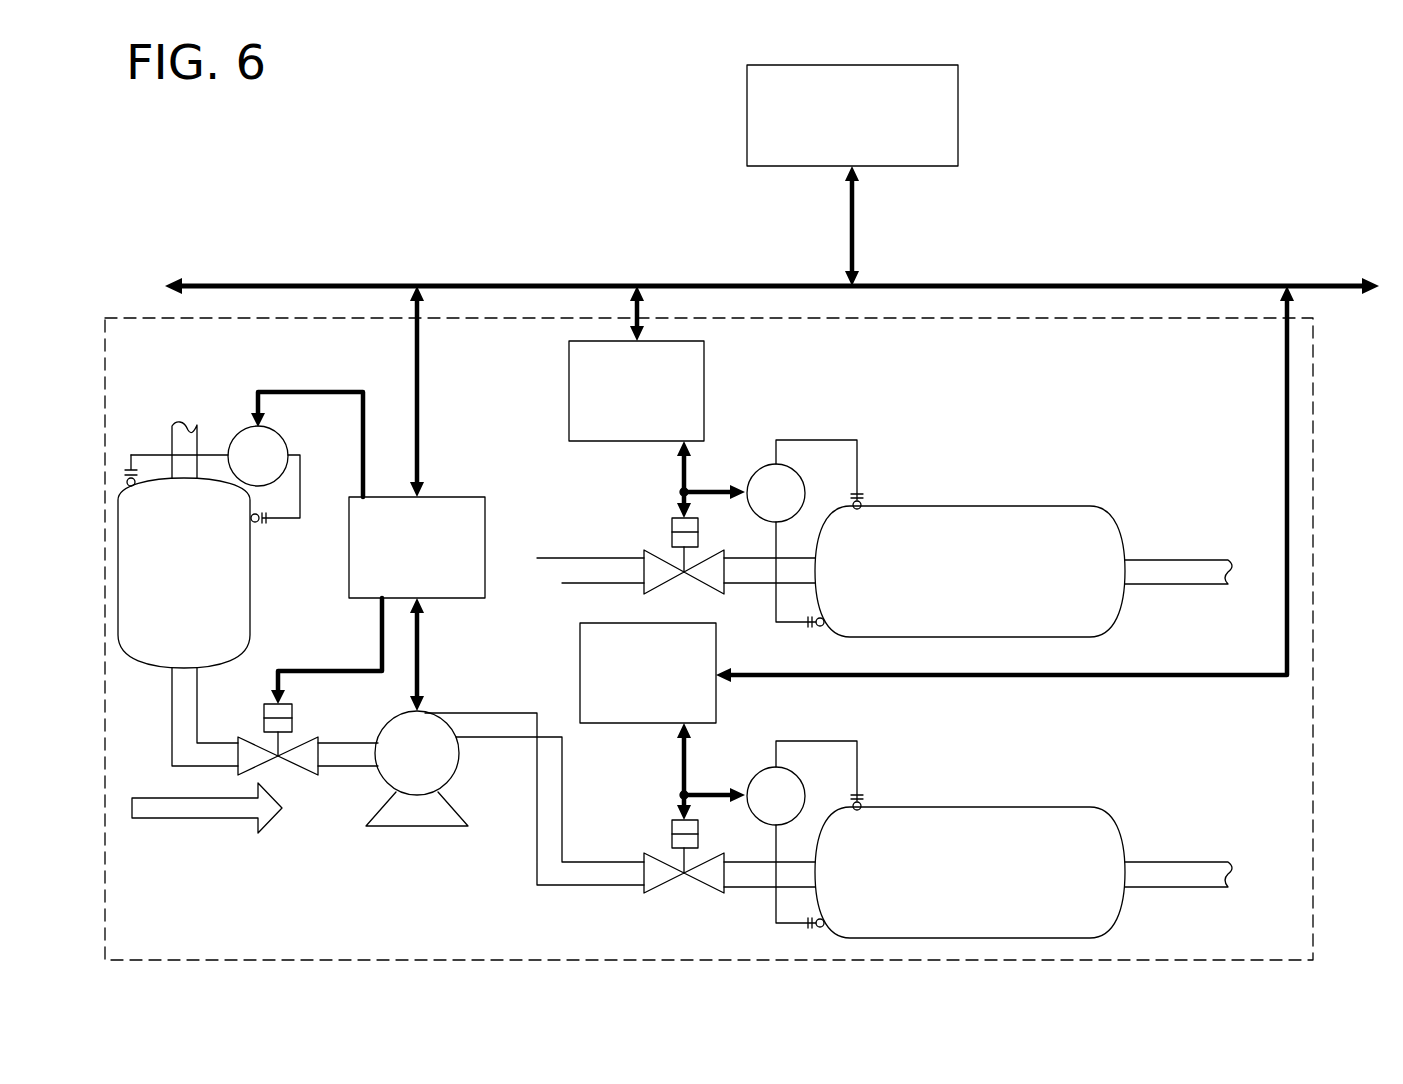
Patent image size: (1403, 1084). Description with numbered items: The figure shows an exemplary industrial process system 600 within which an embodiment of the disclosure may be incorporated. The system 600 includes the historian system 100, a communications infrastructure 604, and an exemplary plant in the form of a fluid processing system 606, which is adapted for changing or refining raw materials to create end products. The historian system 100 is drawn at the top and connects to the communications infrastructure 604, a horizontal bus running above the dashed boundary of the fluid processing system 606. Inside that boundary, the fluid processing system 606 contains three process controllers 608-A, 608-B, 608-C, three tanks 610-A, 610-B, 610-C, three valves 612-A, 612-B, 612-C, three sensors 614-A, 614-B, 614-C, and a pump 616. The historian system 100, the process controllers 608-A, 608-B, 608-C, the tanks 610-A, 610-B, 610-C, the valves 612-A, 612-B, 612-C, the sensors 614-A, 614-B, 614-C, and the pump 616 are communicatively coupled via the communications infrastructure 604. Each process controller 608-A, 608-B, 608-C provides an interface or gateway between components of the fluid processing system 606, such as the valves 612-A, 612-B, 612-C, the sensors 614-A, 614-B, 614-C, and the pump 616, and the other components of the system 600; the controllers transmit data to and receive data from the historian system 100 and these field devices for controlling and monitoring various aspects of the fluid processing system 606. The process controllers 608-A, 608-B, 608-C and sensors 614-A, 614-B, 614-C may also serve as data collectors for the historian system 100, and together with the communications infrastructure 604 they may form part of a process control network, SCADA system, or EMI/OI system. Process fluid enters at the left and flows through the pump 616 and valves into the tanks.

The system 600 is at (496, 84).
The historian system 100 is at (838, 140).
The communications infrastructure 604 is at (257, 285).
The fluid processing system 606 is at (1314, 403).
The process controller 608-A is at (485, 508).
The process controller 608-B is at (706, 381).
The process controller 608-C is at (628, 723).
The tank 610-A is at (250, 597).
The tank 610-B is at (989, 506).
The tank 610-C is at (990, 807).
The valve 612-A is at (292, 721).
The valve 612-B is at (672, 532).
The valve 612-C is at (672, 835).
The sensor 614-A is at (240, 436).
The sensor 614-B is at (758, 472).
The sensor 614-C is at (758, 774).
The pump 616 is at (415, 828).